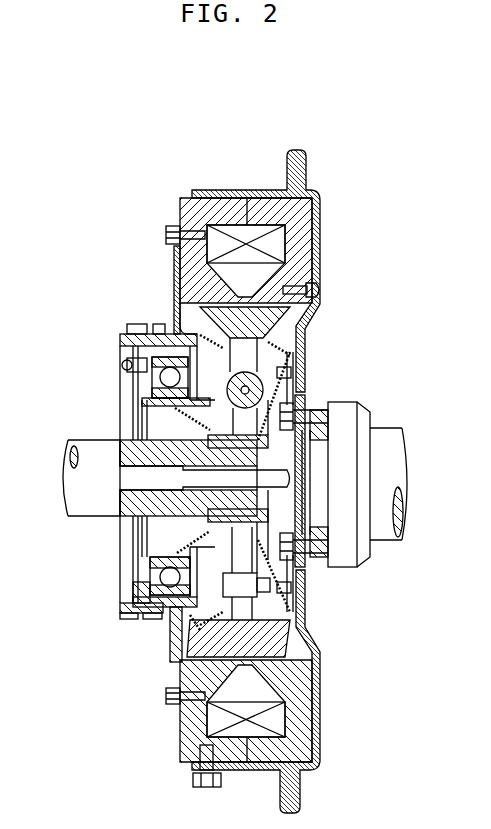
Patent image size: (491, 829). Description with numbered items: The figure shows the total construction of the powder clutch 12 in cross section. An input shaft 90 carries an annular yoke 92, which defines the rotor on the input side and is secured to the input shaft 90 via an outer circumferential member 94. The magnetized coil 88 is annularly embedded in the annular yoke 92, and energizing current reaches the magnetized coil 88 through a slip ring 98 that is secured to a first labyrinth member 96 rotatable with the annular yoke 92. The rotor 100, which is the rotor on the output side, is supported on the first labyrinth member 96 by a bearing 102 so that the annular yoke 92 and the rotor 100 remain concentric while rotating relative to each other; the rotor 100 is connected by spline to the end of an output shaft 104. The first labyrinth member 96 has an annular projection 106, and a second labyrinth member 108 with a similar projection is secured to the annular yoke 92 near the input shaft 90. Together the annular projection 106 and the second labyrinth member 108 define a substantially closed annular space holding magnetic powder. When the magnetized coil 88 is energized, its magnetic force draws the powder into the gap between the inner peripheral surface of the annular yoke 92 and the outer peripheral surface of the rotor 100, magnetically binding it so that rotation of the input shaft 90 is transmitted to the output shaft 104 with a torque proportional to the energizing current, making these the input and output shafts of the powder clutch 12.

The powder clutch 12 is at (226, 178).
The magnetized coil 88 is at (283, 248).
The input shaft 90 is at (390, 443).
The annular yoke 92 is at (196, 212).
The outer circumferential member 94 is at (318, 205).
The first labyrinth member 96 is at (172, 623).
The slip ring 98 is at (134, 322).
The rotor 100 is at (312, 330).
The bearing 102 is at (158, 378).
The output shaft 104 is at (85, 510).
The annular projection 106 is at (178, 630).
The second labyrinth member 108 is at (305, 600).